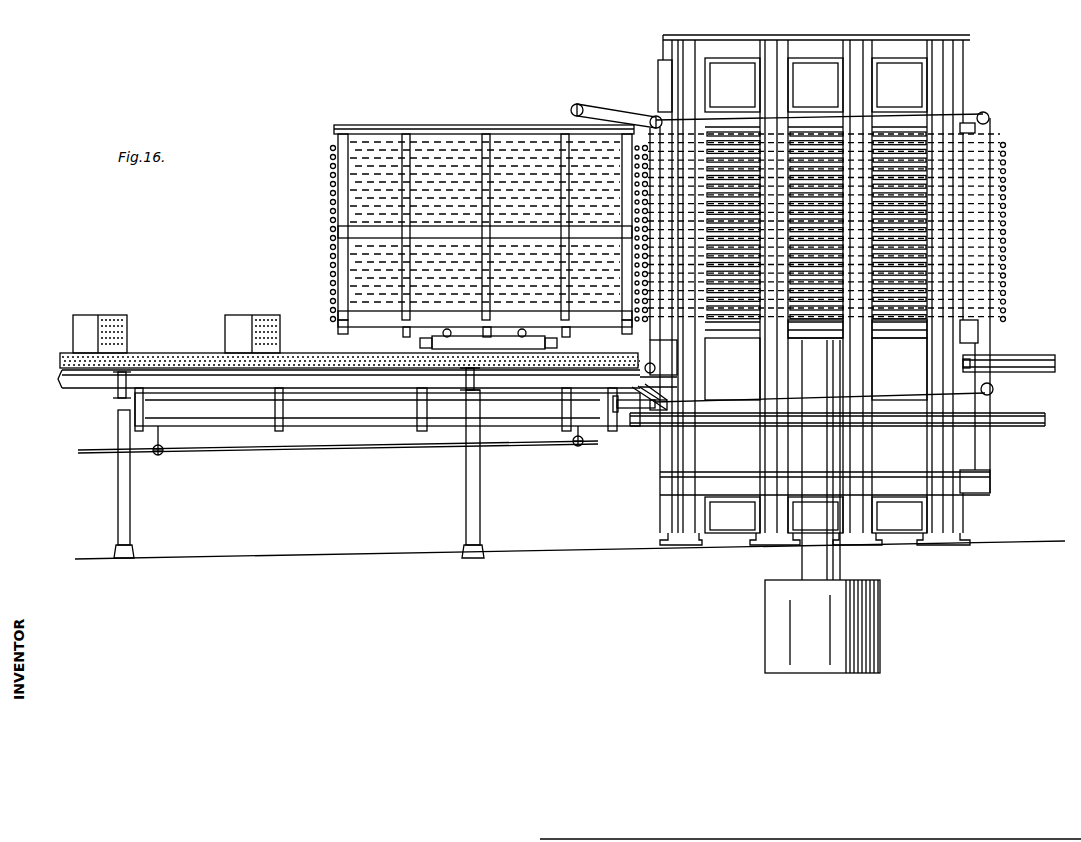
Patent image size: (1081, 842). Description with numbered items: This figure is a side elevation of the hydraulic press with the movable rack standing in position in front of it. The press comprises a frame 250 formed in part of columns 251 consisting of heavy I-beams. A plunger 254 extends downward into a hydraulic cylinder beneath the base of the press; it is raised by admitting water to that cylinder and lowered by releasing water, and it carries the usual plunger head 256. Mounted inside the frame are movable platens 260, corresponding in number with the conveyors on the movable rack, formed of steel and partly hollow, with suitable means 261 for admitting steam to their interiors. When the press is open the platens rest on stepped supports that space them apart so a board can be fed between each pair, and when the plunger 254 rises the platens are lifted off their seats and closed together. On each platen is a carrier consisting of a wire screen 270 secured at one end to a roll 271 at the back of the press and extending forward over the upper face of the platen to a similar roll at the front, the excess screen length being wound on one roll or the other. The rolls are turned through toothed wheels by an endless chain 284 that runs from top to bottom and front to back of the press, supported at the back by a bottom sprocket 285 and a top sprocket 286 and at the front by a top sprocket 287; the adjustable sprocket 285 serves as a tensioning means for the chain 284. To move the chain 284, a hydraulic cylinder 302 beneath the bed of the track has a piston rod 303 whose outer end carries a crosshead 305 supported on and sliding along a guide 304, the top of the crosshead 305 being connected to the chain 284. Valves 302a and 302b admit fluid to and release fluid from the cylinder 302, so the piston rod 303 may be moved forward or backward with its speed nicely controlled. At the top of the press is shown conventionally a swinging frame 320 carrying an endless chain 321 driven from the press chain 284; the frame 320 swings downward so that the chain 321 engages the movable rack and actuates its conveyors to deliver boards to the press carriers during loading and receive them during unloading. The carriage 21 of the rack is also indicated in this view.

The carriage 21 is at (628, 331).
The frame 250 is at (983, 453).
The columns 251 is at (865, 373).
The plunger 254 is at (803, 381).
The plunger head 256 is at (733, 338).
The movable platens 260 is at (815, 329).
The steam admitting means 261 is at (899, 329).
The wire screen 270 is at (993, 134).
The roll 271 is at (1004, 240).
The endless chain 284 is at (1000, 375).
The bottom sprocket 285 is at (994, 390).
The top sprocket 286 is at (990, 114).
The top sprocket 287 is at (658, 116).
The hydraulic cylinder 302 is at (392, 430).
The valve 302a is at (160, 456).
The valve 302b is at (582, 447).
The piston rod 303 is at (616, 412).
The guide 304 is at (725, 432).
The crosshead 305 is at (650, 426).
The swinging frame 320 is at (586, 104).
The endless chain 321 is at (604, 108).